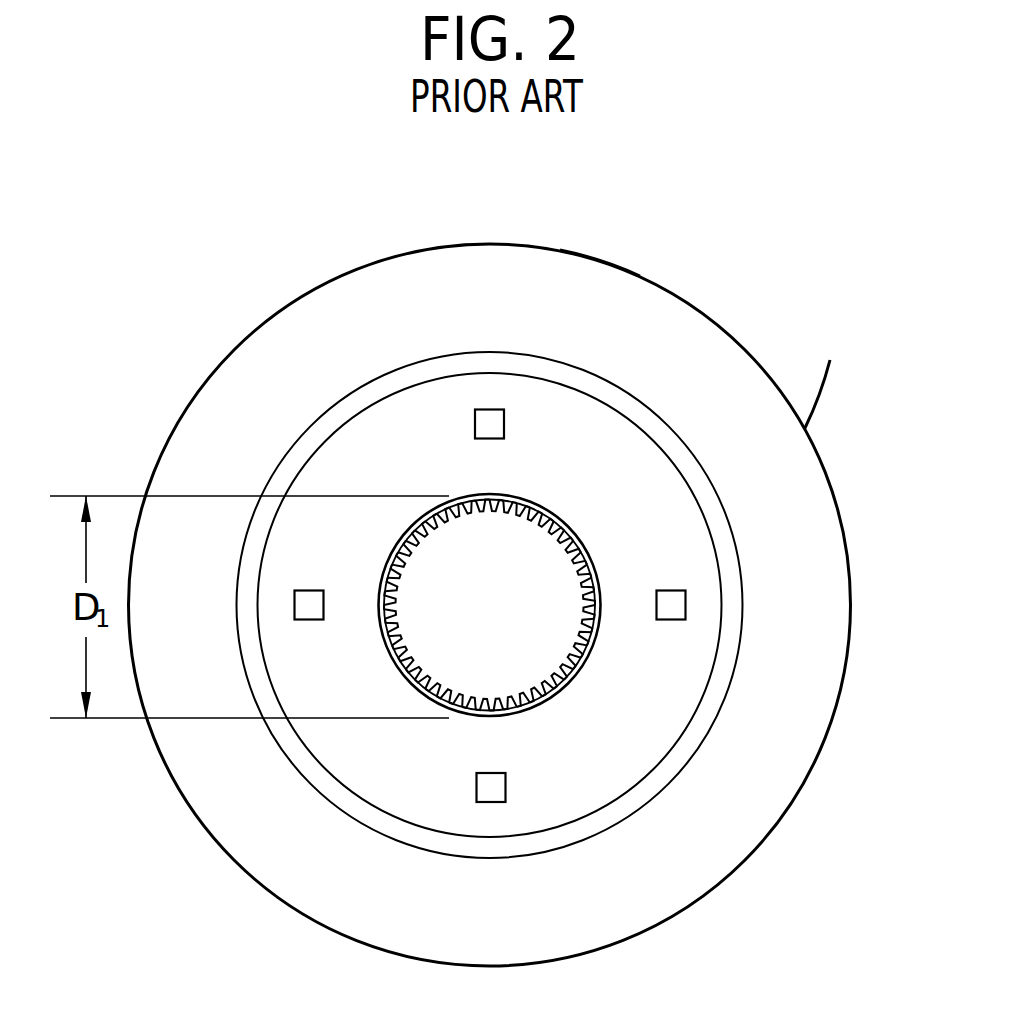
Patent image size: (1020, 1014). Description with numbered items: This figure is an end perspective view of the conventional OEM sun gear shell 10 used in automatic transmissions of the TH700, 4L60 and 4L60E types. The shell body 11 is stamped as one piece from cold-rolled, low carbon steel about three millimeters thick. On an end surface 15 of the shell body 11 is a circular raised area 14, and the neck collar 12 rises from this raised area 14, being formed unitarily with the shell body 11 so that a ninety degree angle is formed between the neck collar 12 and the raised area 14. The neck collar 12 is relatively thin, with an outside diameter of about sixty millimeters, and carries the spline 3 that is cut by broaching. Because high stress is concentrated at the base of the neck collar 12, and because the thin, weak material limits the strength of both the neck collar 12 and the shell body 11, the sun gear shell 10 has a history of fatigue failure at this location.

The sun gear shell 10 is at (755, 296).
The shell body 11 is at (805, 428).
The end surface 15 is at (594, 287).
The raised area 14 is at (605, 440).
The neck collar 12 is at (599, 553).
The spline 3 is at (477, 503).